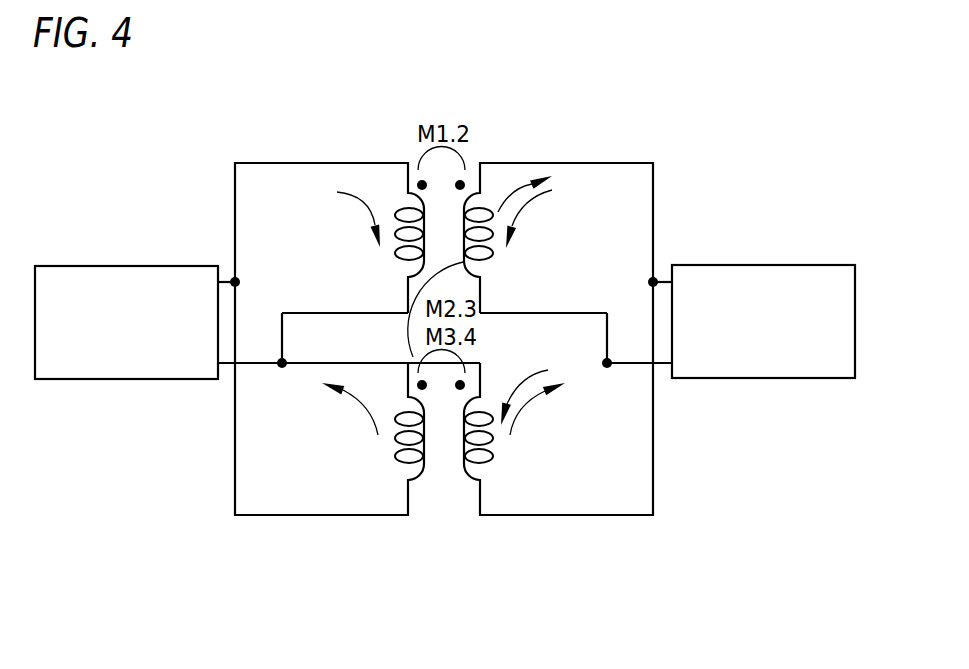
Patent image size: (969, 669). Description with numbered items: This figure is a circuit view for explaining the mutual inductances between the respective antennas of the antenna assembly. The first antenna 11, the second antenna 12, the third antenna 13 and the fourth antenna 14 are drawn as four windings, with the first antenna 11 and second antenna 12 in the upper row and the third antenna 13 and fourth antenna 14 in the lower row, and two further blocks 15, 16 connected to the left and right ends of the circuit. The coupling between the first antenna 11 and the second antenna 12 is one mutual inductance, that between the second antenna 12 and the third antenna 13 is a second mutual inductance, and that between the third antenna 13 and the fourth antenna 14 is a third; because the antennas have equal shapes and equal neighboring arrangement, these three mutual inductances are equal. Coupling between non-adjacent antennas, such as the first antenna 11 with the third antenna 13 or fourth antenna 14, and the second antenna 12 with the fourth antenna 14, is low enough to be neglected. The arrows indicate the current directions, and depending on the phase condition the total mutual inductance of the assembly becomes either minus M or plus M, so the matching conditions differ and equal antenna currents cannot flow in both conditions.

The first antenna 11 is at (323, 163).
The second antenna 12 is at (567, 163).
The third antenna 13 is at (312, 515).
The fourth antenna 14 is at (558, 515).
The first circuit block 15 is at (104, 266).
The second circuit block 16 is at (762, 265).